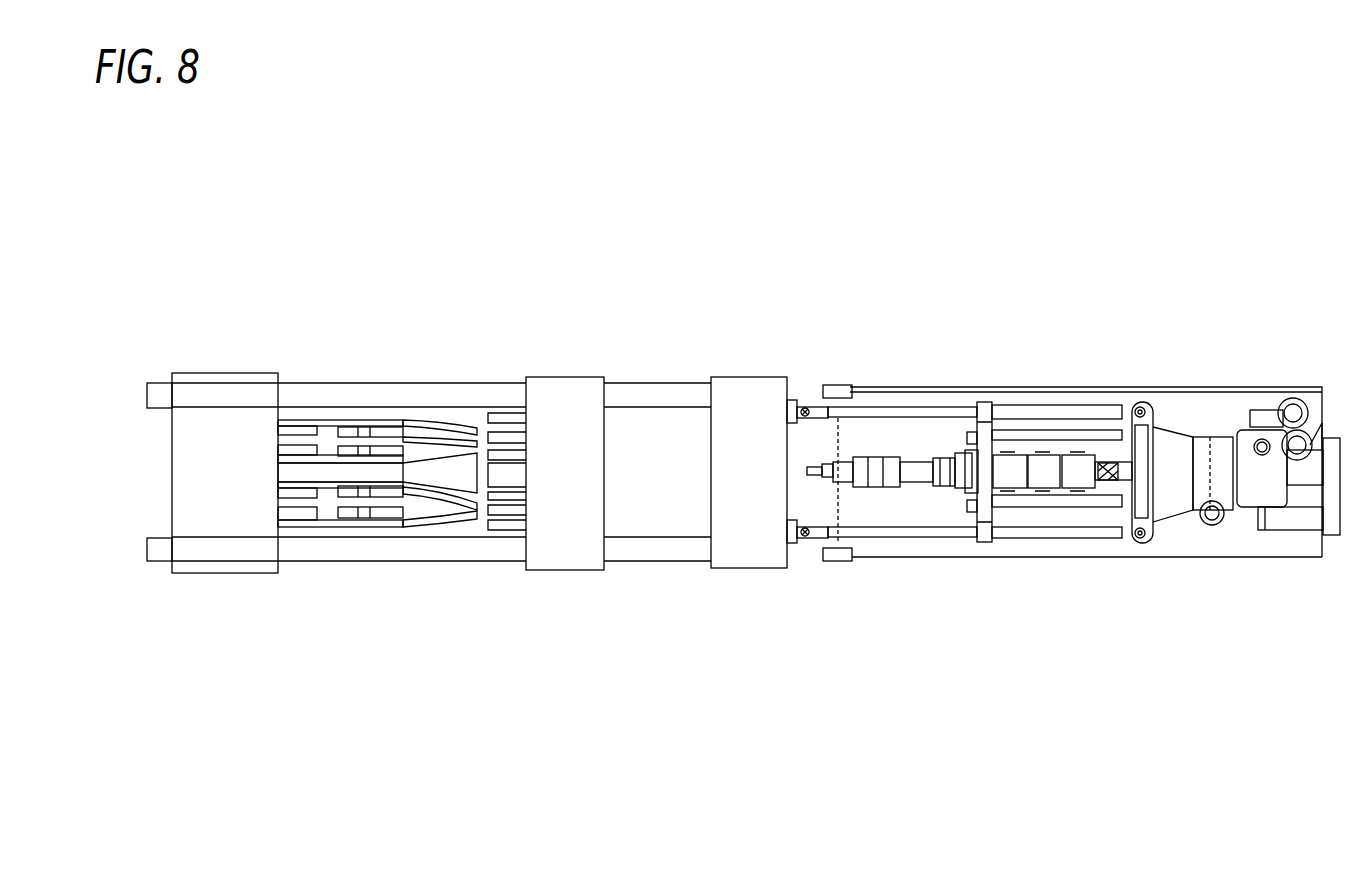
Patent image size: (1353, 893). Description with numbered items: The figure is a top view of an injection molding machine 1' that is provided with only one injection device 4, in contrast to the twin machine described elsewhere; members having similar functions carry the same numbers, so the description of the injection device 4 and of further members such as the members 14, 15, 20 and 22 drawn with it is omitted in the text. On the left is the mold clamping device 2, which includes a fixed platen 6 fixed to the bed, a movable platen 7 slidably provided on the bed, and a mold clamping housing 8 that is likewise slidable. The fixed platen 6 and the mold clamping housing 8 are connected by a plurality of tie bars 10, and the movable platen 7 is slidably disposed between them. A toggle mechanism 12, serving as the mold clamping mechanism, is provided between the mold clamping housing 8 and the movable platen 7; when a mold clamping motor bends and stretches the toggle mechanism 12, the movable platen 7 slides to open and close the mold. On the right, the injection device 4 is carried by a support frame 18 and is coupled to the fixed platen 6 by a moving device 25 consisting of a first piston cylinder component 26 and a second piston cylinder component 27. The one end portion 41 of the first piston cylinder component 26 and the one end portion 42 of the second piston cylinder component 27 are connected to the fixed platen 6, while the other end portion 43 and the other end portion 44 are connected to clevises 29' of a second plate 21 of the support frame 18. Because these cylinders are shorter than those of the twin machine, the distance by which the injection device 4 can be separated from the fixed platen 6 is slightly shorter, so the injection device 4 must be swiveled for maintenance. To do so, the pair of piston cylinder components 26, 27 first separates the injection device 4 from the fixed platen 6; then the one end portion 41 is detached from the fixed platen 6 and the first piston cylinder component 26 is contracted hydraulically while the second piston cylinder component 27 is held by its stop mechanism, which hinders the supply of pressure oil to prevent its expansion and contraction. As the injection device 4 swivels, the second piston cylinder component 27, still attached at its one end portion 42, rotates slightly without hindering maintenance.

The injection molding machine 1' is at (1284, 229).
The mold clamping device 2 is at (750, 290).
The injection device 4 is at (1110, 305).
The fixed platen 6 is at (735, 375).
The movable platen 7 is at (553, 377).
The mold clamping housing 8 is at (240, 373).
The tie bars 10 is at (490, 383).
The toggle mechanism 12 is at (390, 402).
The plasticizing screw 14 is at (935, 465).
The drive unit 15 is at (1240, 430).
The support frame 18 is at (1160, 580).
The front plate 20 is at (977, 540).
The second plate 21 is at (1150, 427).
The pivot bearing 22 is at (1220, 485).
The moving device 25 is at (884, 380).
The first piston cylinder component 26 is at (878, 538).
The second piston cylinder component 27 is at (906, 412).
The clevises 29' is at (1182, 467).
The one end portion 41 is at (800, 543).
The one end portion 42 is at (797, 405).
The other end portion 43 is at (1140, 536).
The other end portion 44 is at (1138, 407).